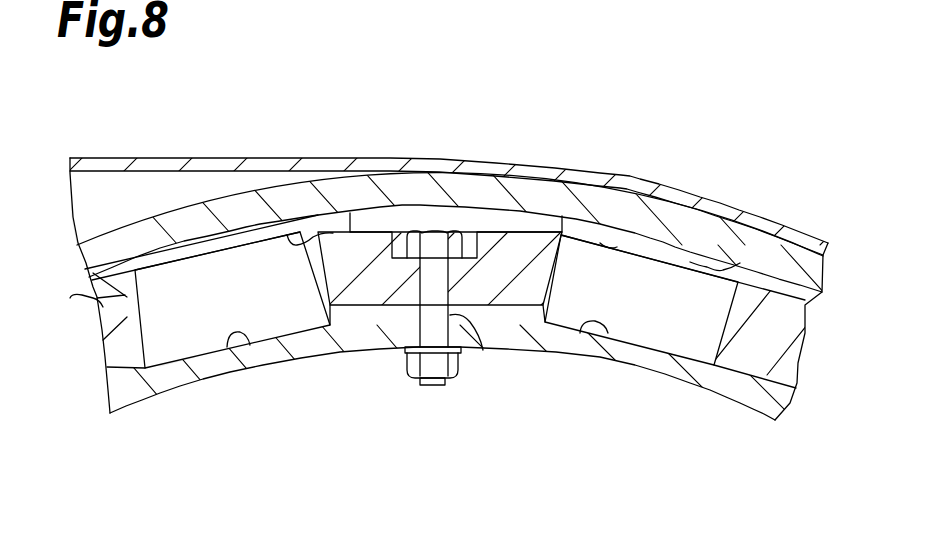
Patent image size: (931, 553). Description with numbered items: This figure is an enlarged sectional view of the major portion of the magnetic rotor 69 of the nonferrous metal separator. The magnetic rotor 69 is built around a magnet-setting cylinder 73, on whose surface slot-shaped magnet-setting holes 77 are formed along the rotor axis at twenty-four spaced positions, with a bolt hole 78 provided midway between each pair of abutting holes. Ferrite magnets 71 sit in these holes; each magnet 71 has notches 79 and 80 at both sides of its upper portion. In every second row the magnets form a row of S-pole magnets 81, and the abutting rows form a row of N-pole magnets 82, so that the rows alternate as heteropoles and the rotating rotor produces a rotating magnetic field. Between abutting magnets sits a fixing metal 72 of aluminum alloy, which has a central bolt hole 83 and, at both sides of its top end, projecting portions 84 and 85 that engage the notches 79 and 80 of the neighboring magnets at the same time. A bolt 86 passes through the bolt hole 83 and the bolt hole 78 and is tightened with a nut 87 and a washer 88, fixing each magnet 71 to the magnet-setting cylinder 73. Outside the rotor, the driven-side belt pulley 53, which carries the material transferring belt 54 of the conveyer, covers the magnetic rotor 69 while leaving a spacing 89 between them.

The driven-side belt pulley 53 is at (70, 203).
The material transferring belt 54 is at (208, 165).
The magnetic rotor 69 is at (97, 398).
The magnet 71 is at (273, 313).
The fixing metal 72 is at (116, 348).
The magnet-setting cylinder 73 is at (324, 268).
The magnet-setting holes 77 is at (227, 347).
The bolt hole 78 is at (483, 350).
The notch 79 is at (70, 298).
The notch 80 is at (287, 235).
The row of S-pole magnets 81 is at (680, 360).
The row of N-pole magnets 82 is at (179, 361).
The bolt hole 83 is at (377, 305).
The projecting portion 84 is at (343, 233).
The projecting portion 85 is at (128, 297).
The bolt 86 is at (460, 231).
The nut 87 is at (458, 385).
The washer 88 is at (402, 365).
The spacing 89 is at (812, 272).